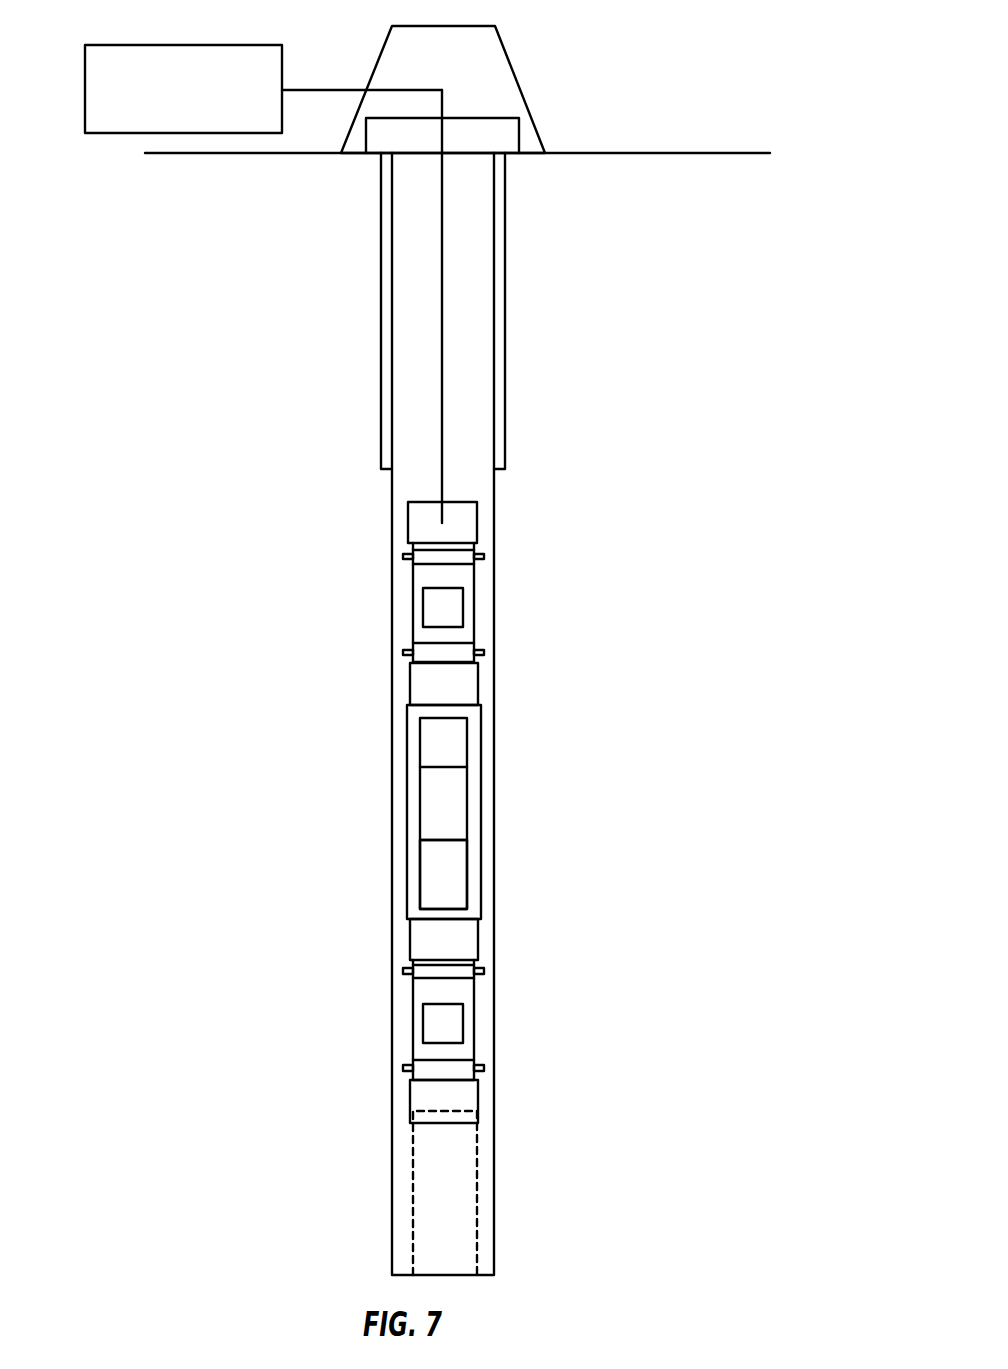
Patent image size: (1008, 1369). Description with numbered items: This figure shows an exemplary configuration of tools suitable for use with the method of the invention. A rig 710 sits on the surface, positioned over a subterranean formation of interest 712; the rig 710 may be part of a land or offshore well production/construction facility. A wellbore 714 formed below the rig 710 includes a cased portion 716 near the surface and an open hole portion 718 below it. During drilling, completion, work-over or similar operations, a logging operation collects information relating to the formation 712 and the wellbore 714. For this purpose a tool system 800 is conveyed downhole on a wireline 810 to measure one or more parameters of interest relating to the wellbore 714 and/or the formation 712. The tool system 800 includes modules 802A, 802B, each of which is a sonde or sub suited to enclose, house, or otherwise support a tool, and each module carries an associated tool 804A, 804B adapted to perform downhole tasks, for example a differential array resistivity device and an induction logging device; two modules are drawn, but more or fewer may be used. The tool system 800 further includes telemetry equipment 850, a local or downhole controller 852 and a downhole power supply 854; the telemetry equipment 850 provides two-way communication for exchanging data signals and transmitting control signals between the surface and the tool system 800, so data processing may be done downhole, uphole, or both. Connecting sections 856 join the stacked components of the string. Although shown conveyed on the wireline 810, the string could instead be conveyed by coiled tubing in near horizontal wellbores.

The rig 710 is at (580, 45).
The subterranean formation of interest 712 is at (113, 45).
The wellbore 714 is at (372, 706).
The cased portion 716 is at (505, 215).
The open hole portion 718 is at (497, 1067).
The tool system 800 is at (584, 792).
The module 802A is at (486, 591).
The module 802B is at (486, 1014).
The tool 804A is at (437, 607).
The tool 804B is at (437, 1027).
The wireline 810 is at (443, 297).
The telemetry equipment 850 is at (457, 739).
The downhole controller 852 is at (455, 800).
The downhole power supply 854 is at (455, 872).
The connector sub 856 is at (473, 682).